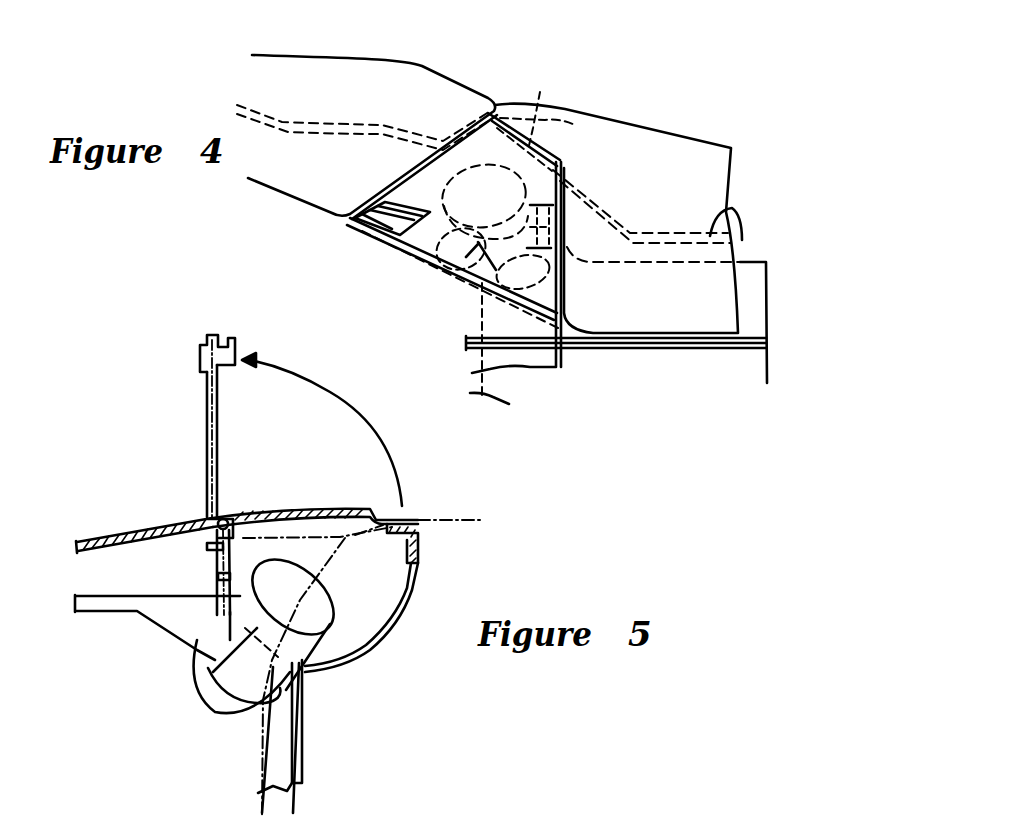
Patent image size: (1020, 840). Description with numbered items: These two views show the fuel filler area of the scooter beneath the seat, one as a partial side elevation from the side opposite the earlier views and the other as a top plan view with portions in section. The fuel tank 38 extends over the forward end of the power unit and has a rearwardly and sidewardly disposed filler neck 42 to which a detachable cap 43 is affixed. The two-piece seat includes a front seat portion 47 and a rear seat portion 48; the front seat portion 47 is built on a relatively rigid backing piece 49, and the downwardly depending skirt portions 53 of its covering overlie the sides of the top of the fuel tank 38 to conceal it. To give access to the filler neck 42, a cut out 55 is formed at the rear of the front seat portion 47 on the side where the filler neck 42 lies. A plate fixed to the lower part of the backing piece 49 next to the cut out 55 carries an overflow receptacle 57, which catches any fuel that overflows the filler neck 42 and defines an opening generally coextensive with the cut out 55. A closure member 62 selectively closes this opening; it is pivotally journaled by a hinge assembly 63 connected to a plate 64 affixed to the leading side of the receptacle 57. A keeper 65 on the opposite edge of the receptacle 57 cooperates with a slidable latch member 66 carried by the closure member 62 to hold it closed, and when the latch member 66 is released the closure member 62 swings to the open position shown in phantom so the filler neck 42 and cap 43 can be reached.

In FIG. 4, the fuel tank 38 is at (480, 383).
In FIG. 5, the fuel tank 38 is at (308, 749).
In FIG. 4, the filler neck 42 is at (460, 267).
In FIG. 5, the filler neck 42 is at (205, 650).
In FIG. 4, the detachable cap 43 is at (423, 252).
In FIG. 5, the detachable cap 43 is at (232, 667).
In FIG. 4, the front seat portion 47 is at (632, 134).
In FIG. 5, the front seat portion 47 is at (340, 547).
In FIG. 4, the rear seat portion 48 is at (437, 62).
In FIG. 5, the rear seat portion 48 is at (462, 517).
In FIG. 4, the backing piece 49 is at (760, 205).
In FIG. 4, the skirt portion 53 is at (633, 328).
In FIG. 5, the skirt portion 53 is at (130, 540).
In FIG. 4, the cut out 55 is at (518, 153).
In FIG. 5, the cut out 55 is at (287, 523).
In FIG. 4, the overflow receptacle 57 is at (538, 371).
In FIG. 5, the overflow receptacle 57 is at (351, 659).
In FIG. 4, the closure member 62 is at (530, 176).
In FIG. 5, the closure member 62 is at (305, 503).
In FIG. 4, the hinge assembly 63 is at (572, 178).
In FIG. 5, the hinge assembly 63 is at (228, 517).
In FIG. 5, the plate 64 is at (220, 575).
In FIG. 5, the keeper 65 is at (420, 540).
In FIG. 4, the slidable latch member 66 is at (364, 227).
In FIG. 5, the slidable latch member 66 is at (384, 507).